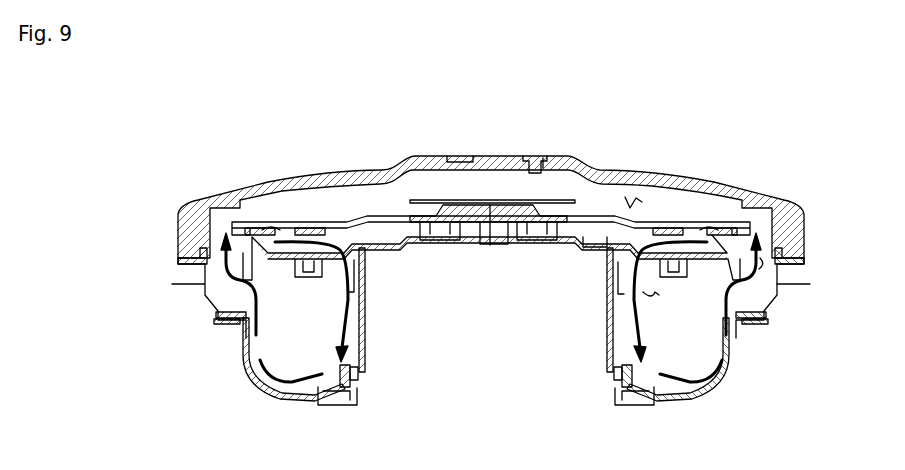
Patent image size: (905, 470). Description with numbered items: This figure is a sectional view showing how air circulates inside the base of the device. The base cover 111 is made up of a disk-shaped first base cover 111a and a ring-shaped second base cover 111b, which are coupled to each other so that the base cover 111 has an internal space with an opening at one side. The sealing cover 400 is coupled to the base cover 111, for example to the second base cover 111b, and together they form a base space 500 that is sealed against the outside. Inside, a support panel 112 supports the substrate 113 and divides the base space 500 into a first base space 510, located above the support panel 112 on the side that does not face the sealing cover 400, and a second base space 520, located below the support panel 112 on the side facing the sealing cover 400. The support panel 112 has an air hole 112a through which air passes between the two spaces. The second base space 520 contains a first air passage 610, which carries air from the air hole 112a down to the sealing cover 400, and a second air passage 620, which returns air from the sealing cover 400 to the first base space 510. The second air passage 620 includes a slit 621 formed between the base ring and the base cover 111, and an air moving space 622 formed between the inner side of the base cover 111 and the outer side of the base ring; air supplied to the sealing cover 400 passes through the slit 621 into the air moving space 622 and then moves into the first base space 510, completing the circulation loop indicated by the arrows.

The base cover 111 is at (93, 277).
The first base cover 111a is at (180, 213).
The second base cover 111b is at (205, 286).
The support panel 112 is at (760, 221).
The air hole 112a is at (271, 230).
The substrate 113 is at (441, 200).
The sealing cover 400 is at (700, 396).
The base space 500 is at (522, 312).
The first base space 510 is at (631, 206).
The second base space 520 is at (645, 300).
The first air passage 610 is at (626, 330).
The second air passage 620 is at (736, 338).
The slit 621 is at (738, 298).
The air moving space 622 is at (770, 266).